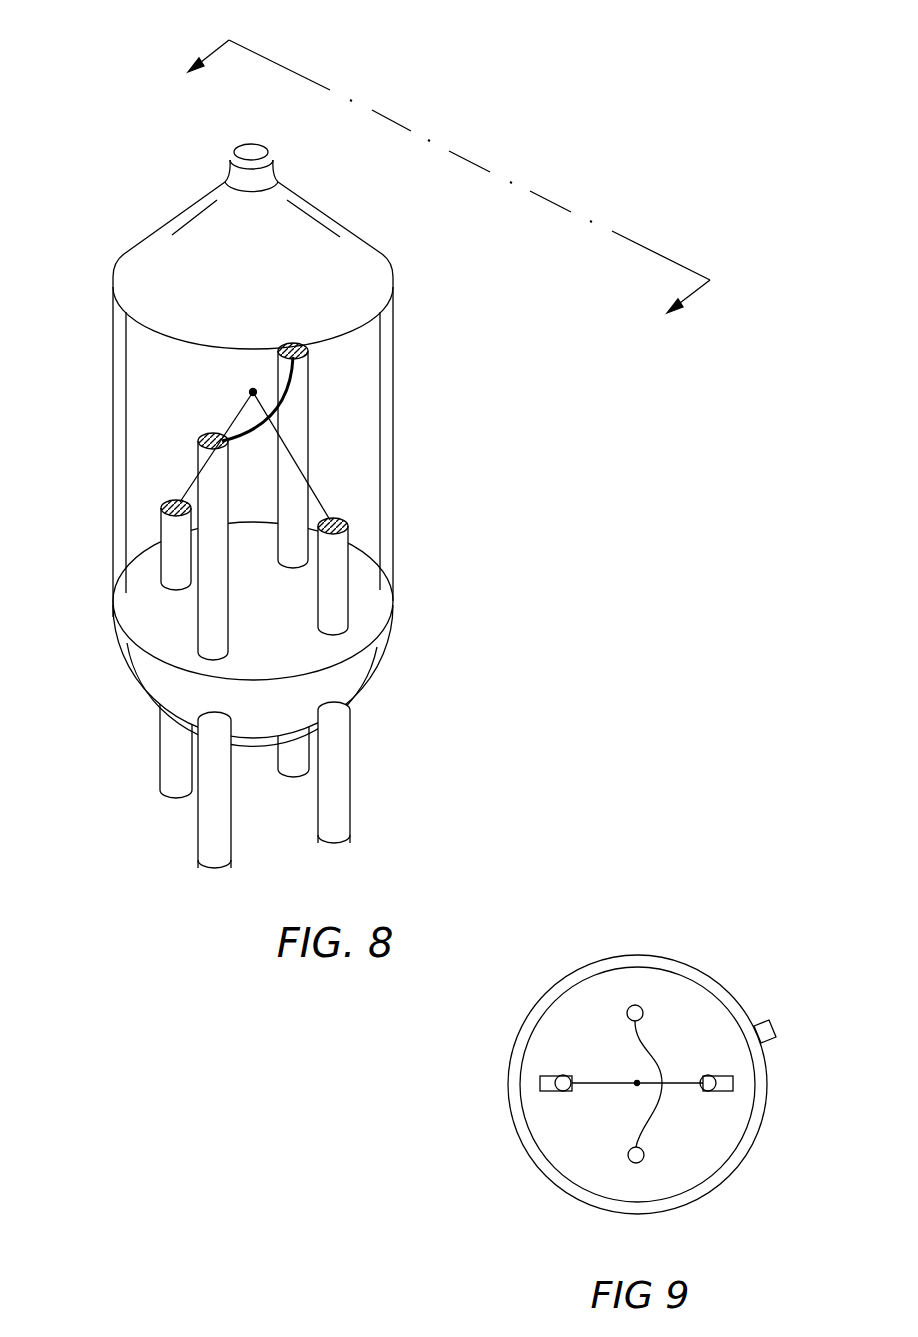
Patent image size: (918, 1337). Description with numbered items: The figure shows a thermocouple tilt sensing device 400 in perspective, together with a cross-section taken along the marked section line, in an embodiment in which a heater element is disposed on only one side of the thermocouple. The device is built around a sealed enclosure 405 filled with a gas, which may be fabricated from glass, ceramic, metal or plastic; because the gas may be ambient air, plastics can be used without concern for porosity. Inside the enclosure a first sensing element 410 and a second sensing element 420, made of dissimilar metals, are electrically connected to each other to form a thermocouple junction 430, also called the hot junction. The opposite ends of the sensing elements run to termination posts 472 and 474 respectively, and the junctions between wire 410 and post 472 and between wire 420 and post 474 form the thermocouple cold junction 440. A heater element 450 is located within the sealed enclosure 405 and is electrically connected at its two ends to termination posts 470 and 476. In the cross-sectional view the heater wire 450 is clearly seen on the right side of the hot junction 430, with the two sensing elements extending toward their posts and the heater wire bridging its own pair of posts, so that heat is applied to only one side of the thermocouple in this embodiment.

In FIG. 8, the thermocouple tilt sensing device 400 is at (370, 210).
In FIG. 8, the sealed enclosure 405 is at (393, 462).
In FIG. 8, the first sensing element 410 is at (183, 487).
In FIG. 9, the first sensing element 410 is at (590, 1083).
In FIG. 8, the second sensing element 420 is at (297, 458).
In FIG. 9, the second sensing element 420 is at (678, 1083).
In FIG. 8, the thermocouple junction 430 is at (250, 391).
In FIG. 9, the thermocouple junction 430 is at (637, 1085).
In FIG. 8, the thermocouple cold junction 440 is at (163, 508).
In FIG. 8, the heater element 450 is at (274, 408).
In FIG. 9, the heater element 450 is at (655, 1130).
In FIG. 9, the termination post 470 is at (635, 1005).
In FIG. 8, the termination post 472 is at (167, 560).
In FIG. 9, the termination post 472 is at (540, 1083).
In FIG. 8, the termination post 474 is at (343, 578).
In FIG. 9, the termination post 474 is at (733, 1084).
In FIG. 8, the termination post 476 is at (298, 408).
In FIG. 9, the termination post 476 is at (636, 1163).